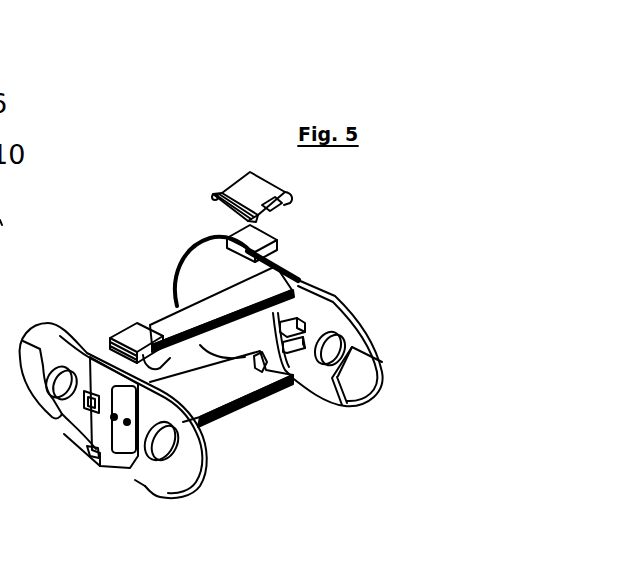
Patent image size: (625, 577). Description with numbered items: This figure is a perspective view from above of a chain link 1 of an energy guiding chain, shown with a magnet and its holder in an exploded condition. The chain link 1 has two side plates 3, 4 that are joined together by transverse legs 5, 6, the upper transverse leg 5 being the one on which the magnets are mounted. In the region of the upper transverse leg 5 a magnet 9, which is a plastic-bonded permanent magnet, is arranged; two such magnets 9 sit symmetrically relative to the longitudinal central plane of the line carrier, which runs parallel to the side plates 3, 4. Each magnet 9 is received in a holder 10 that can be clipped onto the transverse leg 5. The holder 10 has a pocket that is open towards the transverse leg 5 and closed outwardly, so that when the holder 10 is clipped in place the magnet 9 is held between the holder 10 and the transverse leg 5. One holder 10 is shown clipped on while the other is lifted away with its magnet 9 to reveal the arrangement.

The chain link 1 is at (238, 488).
The side plate 3 is at (132, 475).
The side plate 4 is at (363, 404).
The upper transverse leg 5 is at (195, 306).
The transverse leg 6 is at (243, 402).
The magnet 9 is at (273, 247).
The holder 10 is at (242, 153).